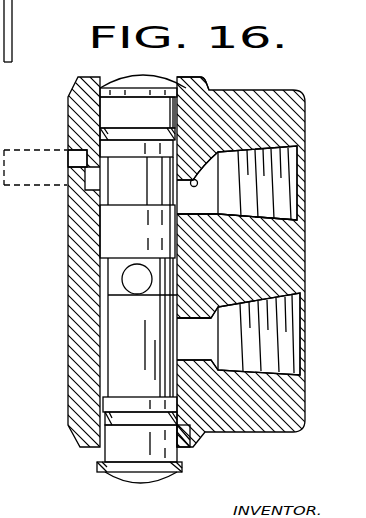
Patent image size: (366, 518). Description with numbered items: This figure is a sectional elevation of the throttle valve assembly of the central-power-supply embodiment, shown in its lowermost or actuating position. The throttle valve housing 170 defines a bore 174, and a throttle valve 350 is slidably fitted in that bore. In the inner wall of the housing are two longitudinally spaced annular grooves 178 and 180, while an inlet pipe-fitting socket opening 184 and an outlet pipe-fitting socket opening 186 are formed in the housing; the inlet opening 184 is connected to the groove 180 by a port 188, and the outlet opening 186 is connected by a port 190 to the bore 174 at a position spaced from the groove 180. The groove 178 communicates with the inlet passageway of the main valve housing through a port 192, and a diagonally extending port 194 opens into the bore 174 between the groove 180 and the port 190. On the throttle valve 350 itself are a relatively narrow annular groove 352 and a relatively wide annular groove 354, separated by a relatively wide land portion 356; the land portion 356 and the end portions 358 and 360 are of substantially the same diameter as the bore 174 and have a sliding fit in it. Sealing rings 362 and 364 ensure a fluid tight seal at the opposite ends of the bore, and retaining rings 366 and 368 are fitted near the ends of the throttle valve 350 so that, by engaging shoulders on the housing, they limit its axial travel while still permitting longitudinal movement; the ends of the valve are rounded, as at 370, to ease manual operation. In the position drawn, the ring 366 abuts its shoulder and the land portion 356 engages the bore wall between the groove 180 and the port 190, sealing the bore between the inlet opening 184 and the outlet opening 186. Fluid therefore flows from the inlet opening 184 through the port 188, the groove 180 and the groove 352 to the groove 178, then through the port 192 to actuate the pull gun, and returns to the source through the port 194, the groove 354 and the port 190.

The throttle valve housing 170 is at (262, 68).
The bore 174 is at (186, 282).
The annular groove 178 is at (203, 118).
The annular groove 180 is at (237, 230).
The inlet pipe-fitting socket opening 184 is at (297, 152).
The outlet pipe-fitting socket opening 186 is at (286, 372).
The port 188 is at (204, 166).
The port 190 is at (195, 368).
The port 192 is at (72, 168).
The port 194 is at (85, 293).
The throttle valve 350 is at (156, 108).
The annular groove 352 is at (100, 201).
The annular groove 354 is at (108, 364).
The land portion 356 is at (100, 243).
The end portion 358 is at (106, 107).
The end portion 360 is at (110, 441).
The sealing ring 362 is at (100, 133).
The sealing ring 364 is at (200, 437).
The retaining ring 366 is at (118, 77).
The retaining ring 368 is at (98, 466).
The rounded end 370 is at (140, 484).